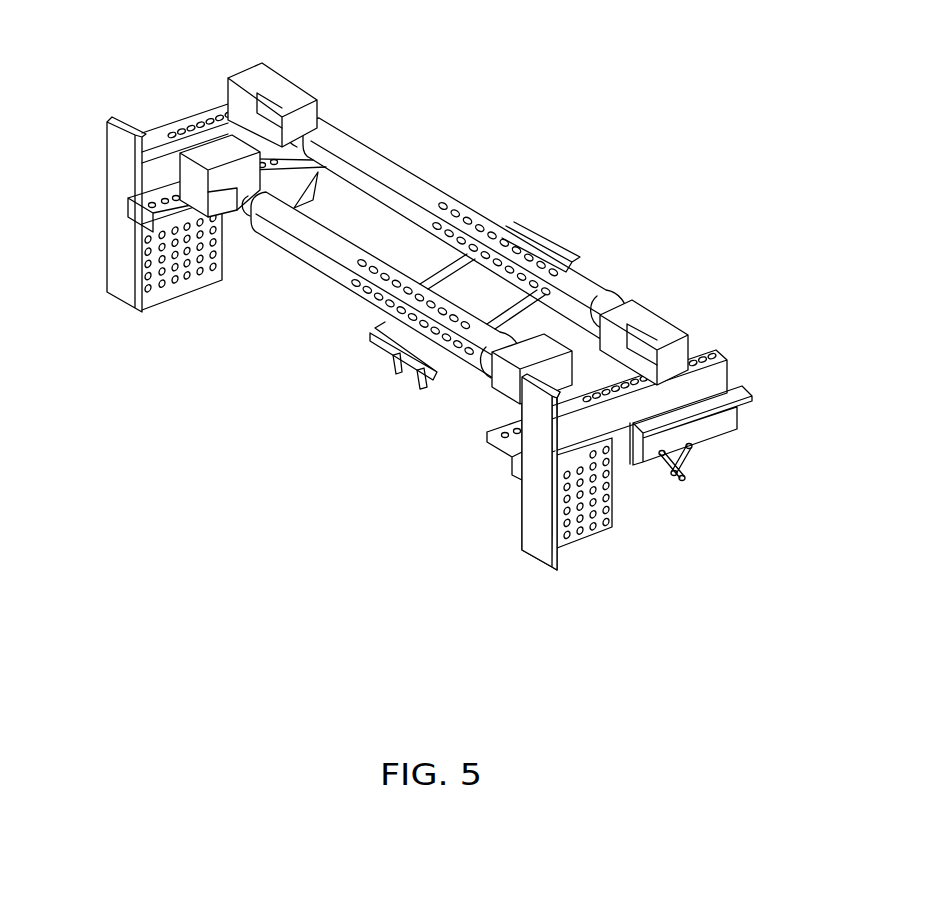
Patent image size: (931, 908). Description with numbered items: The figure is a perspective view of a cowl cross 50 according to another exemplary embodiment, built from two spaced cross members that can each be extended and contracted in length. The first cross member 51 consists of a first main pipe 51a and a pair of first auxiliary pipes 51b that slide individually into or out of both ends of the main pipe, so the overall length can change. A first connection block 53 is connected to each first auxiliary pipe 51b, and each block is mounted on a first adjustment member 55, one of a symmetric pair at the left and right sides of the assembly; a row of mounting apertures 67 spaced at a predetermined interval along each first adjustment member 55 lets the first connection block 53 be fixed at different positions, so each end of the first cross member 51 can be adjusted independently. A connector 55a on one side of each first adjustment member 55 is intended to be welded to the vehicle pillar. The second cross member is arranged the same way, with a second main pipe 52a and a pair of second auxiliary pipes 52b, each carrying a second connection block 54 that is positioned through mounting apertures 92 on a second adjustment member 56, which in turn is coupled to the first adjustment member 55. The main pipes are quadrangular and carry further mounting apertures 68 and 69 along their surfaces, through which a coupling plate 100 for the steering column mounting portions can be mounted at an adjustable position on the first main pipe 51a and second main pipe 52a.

The cowl cross 50 is at (648, 78).
The first cross member 51 is at (465, 220).
The first main pipe 51a is at (577, 287).
The first auxiliary pipes 51b is at (306, 112).
The second main pipe 52a is at (343, 272).
The second auxiliary pipes 52b is at (237, 215).
The first connection block 53 is at (274, 70).
The second connection block 54 is at (153, 170).
The first adjustment member 55 is at (155, 138).
The connector 55a is at (112, 186).
The second adjustment member 56 is at (133, 224).
The mounting apertures 67 is at (207, 128).
The mounting apertures 68 is at (480, 230).
The mounting apertures 69 is at (407, 378).
The mounting apertures 92 is at (151, 202).
The coupling plate 100 is at (372, 340).